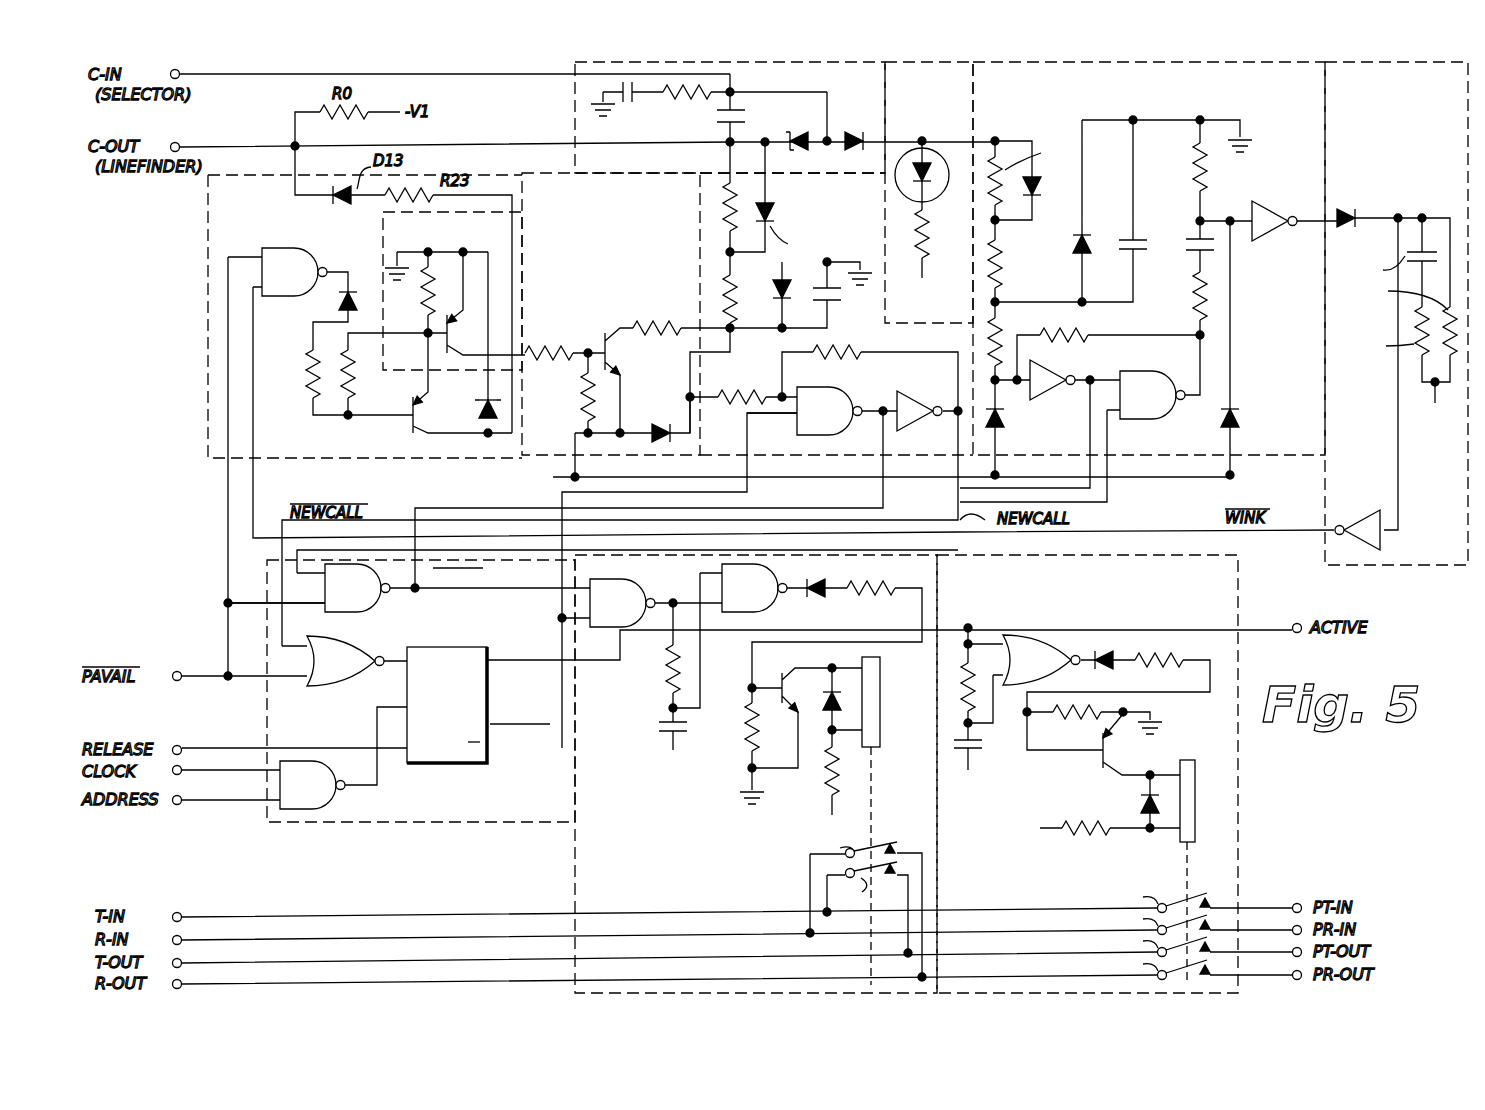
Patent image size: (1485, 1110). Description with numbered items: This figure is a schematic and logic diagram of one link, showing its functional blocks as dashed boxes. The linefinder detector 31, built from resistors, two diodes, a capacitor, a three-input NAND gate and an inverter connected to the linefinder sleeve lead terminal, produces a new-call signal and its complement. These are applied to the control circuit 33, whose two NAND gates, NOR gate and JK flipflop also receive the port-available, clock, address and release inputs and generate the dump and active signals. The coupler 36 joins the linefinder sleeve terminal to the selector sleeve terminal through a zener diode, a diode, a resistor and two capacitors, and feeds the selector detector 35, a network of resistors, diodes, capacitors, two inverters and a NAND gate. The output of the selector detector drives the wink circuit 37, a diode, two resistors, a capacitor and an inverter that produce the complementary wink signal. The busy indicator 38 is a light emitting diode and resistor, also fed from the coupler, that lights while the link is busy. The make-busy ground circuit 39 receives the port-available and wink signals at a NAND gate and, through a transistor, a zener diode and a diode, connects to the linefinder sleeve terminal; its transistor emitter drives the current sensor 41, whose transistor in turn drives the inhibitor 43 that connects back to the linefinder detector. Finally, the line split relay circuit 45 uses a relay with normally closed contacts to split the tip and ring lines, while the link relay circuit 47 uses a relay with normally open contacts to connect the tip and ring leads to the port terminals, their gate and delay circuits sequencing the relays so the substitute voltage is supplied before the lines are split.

The linefinder detector 31 is at (700, 230).
The control circuit 33 is at (412, 818).
The selector detector 35 is at (1270, 440).
The coupler 36 is at (572, 115).
The wink circuit 37 is at (1400, 563).
The busy indicator 38 is at (958, 128).
The make-busy ground circuit 39 is at (208, 238).
The current sensor 41 is at (465, 458).
The inhibitor 43 is at (565, 172).
The line split relay circuit 45 is at (575, 855).
The link relay circuit 47 is at (1220, 588).